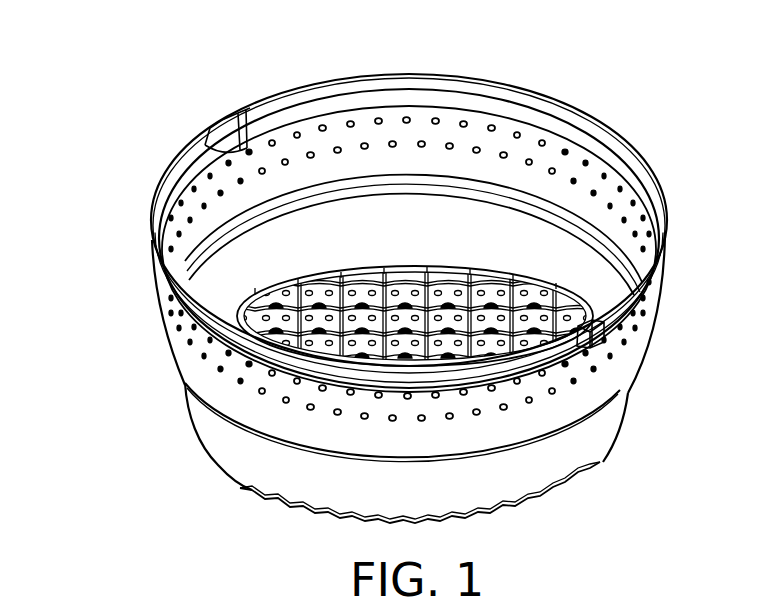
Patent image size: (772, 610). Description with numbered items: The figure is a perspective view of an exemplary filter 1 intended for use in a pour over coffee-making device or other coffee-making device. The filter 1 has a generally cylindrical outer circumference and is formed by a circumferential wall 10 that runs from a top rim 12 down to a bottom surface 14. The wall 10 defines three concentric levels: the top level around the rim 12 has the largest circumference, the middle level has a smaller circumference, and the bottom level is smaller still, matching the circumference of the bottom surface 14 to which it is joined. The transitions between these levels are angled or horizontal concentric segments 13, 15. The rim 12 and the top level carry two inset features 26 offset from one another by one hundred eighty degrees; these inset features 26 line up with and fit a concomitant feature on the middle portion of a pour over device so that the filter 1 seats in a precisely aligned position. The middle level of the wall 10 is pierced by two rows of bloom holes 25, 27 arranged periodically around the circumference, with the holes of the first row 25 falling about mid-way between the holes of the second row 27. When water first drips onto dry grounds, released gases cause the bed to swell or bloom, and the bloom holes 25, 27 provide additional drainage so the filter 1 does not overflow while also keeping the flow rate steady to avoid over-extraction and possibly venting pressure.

The filter 1 is at (127, 187).
The circumferential wall 10 is at (200, 372).
The top rim 12 is at (380, 78).
The transition segment 13 is at (558, 128).
The bottom surface 14 is at (302, 510).
The transition segment 15 is at (592, 240).
The first row of bloom holes 25 is at (566, 364).
The inset feature 26 is at (242, 128).
The second row of bloom holes 27 is at (531, 401).